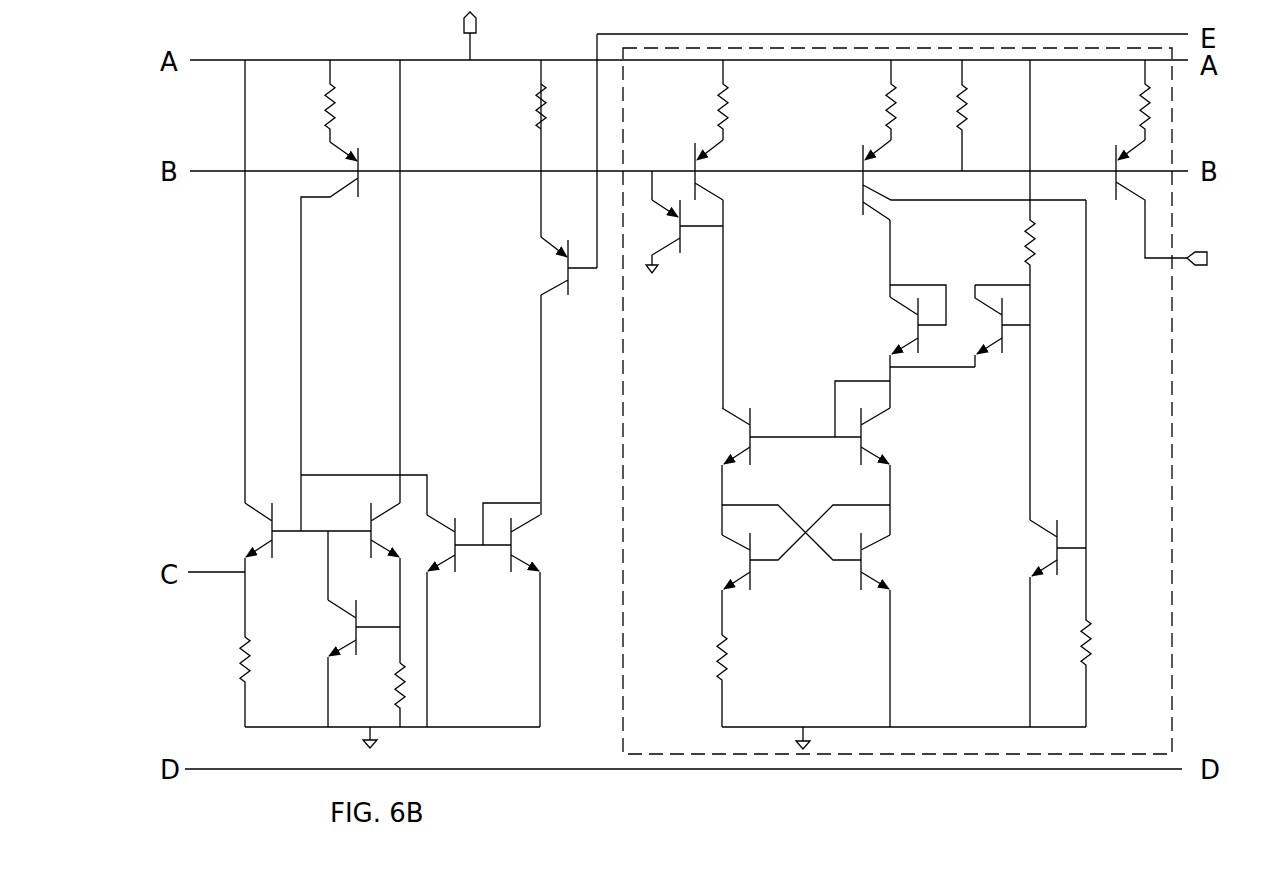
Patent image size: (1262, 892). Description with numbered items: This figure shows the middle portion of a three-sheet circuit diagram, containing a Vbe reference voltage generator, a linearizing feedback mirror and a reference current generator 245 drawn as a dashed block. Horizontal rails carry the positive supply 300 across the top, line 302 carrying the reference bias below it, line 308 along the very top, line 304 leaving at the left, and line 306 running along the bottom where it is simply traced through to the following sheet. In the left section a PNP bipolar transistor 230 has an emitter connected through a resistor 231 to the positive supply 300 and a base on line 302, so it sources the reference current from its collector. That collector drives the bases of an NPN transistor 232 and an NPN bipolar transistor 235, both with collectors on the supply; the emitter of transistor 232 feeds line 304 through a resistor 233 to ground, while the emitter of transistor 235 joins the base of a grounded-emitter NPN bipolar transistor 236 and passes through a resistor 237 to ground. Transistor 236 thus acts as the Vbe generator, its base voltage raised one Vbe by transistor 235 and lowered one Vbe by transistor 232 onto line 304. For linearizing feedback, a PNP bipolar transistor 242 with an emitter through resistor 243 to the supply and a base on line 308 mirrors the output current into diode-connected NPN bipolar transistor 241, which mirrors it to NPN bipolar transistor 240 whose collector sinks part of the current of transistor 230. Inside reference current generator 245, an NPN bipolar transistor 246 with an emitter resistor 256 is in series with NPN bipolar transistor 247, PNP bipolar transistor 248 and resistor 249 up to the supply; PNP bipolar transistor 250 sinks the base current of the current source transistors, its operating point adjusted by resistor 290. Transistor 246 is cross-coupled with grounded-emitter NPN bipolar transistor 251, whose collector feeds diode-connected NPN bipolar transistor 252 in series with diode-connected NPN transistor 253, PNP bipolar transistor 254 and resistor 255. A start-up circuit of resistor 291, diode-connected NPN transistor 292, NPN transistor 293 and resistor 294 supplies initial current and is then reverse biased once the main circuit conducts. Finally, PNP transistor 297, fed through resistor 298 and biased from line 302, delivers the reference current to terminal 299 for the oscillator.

The PNP bipolar transistor 230 is at (366, 184).
The resistor 231 is at (326, 96).
The NPN transistor 232 is at (260, 530).
The resistor 233 is at (240, 652).
The NPN bipolar transistor 235 is at (362, 524).
The NPN bipolar transistor 236 is at (346, 630).
The resistor 237 is at (394, 676).
The NPN bipolar transistor 240 is at (462, 554).
The diode-connected NPN bipolar transistor 241 is at (524, 546).
The PNP bipolar transistor 242 is at (560, 266).
The resistor 243 is at (538, 94).
The reference current generator 245 is at (1172, 368).
The NPN bipolar transistor 246 is at (742, 562).
The NPN bipolar transistor 247 is at (746, 437).
The PNP bipolar transistor 248 is at (690, 164).
The resistor 249 is at (728, 102).
The PNP bipolar transistor 250 is at (682, 236).
The NPN bipolar transistor 251 is at (872, 562).
The diode-connected NPN bipolar transistor 252 is at (892, 438).
The diode-connected NPN transistor 253 is at (906, 328).
The PNP bipolar transistor 254 is at (860, 178).
The resistor 255 is at (898, 98).
The resistor 256 is at (762, 648).
The resistor 290 is at (968, 100).
The resistor 291 is at (1026, 250).
The diode-connected NPN transistor 292 is at (1012, 338).
The NPN transistor 293 is at (1052, 548).
The resistor 294 is at (1082, 646).
The PNP transistor 297 is at (1110, 158).
The resistor 298 is at (1140, 106).
The terminal 299 is at (1195, 250).
The positive supply 300 is at (462, 14).
The line 302 is at (515, 178).
The line 304 is at (228, 574).
The line 306 is at (512, 770).
The line 308 is at (592, 34).